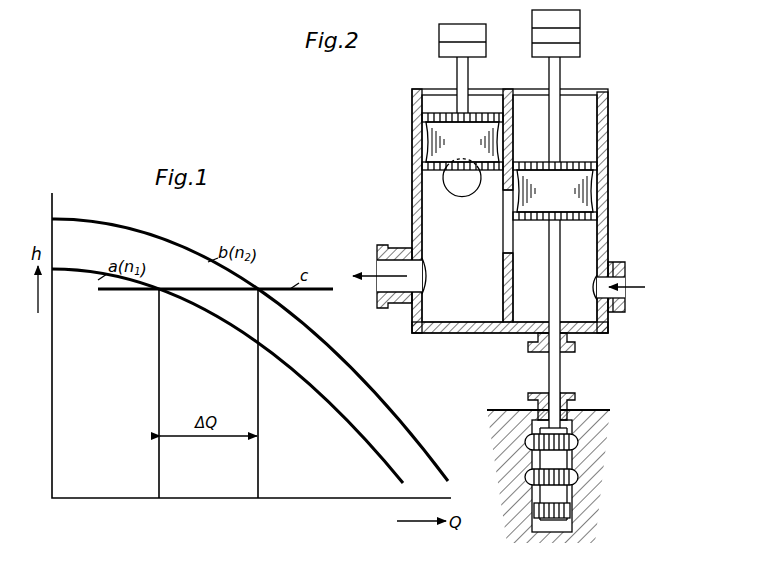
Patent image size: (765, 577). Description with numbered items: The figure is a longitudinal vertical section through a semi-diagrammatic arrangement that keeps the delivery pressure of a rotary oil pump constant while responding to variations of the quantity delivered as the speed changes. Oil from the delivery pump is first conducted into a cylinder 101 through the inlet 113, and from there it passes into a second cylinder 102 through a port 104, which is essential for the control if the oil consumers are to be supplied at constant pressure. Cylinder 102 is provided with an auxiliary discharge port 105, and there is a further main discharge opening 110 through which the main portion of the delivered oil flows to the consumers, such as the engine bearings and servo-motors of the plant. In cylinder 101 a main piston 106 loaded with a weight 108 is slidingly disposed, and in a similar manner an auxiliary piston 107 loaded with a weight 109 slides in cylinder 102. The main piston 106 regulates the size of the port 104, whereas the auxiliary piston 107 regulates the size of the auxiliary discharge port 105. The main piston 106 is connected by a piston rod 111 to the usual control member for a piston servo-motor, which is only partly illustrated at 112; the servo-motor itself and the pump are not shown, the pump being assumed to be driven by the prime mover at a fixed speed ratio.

The cylinder 101 is at (605, 148).
The cylinder 102 is at (417, 187).
The port 104 is at (505, 243).
The auxiliary discharge port 105 is at (446, 194).
The main piston 106 is at (599, 191).
The auxiliary piston 107 is at (437, 140).
The weight 108 is at (575, 37).
The weight 109 is at (442, 50).
The main discharge opening 110 is at (397, 267).
The piston rod 111 is at (556, 255).
The control member for piston servo-motor 112 is at (623, 479).
The inlet 113 is at (615, 312).